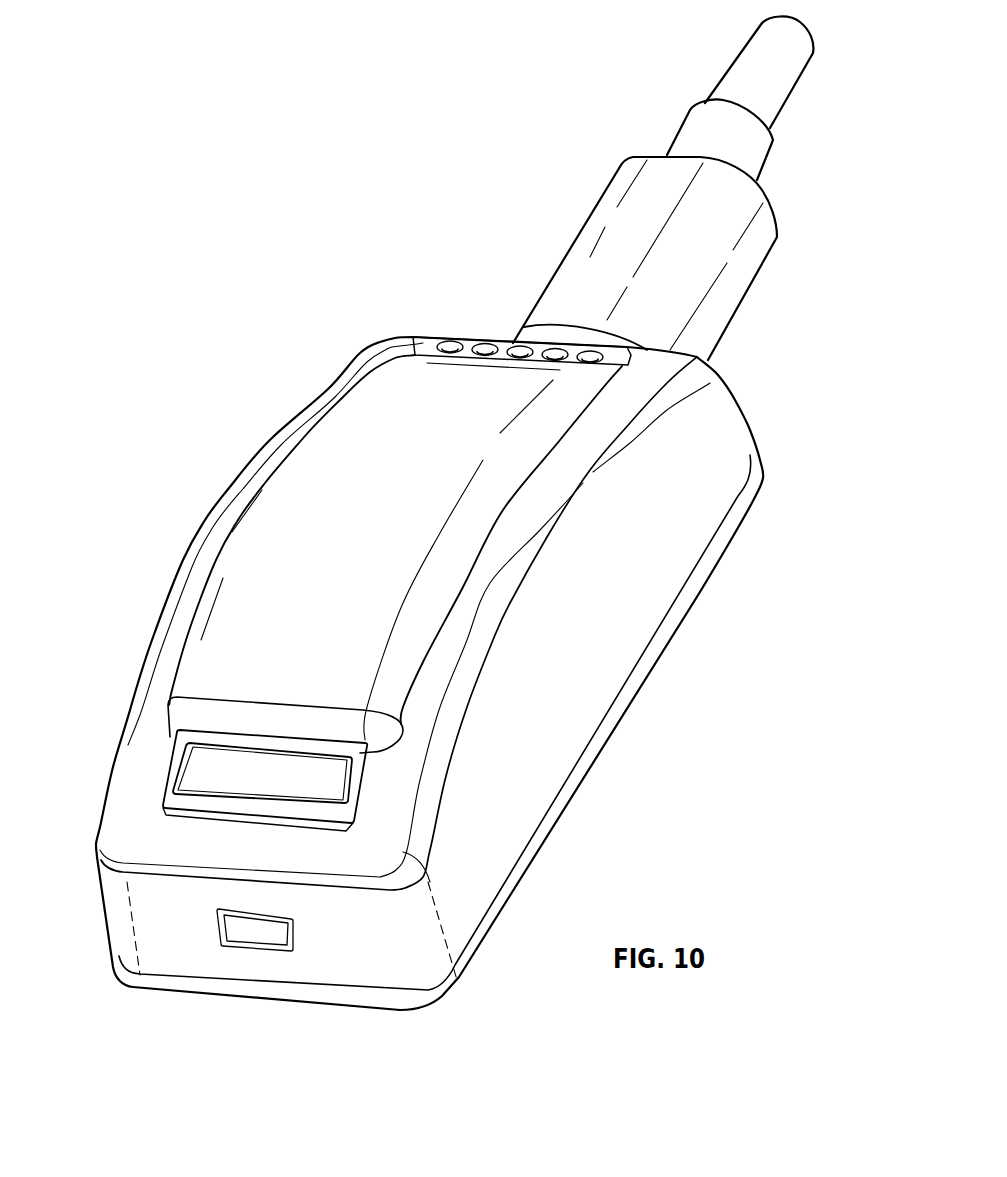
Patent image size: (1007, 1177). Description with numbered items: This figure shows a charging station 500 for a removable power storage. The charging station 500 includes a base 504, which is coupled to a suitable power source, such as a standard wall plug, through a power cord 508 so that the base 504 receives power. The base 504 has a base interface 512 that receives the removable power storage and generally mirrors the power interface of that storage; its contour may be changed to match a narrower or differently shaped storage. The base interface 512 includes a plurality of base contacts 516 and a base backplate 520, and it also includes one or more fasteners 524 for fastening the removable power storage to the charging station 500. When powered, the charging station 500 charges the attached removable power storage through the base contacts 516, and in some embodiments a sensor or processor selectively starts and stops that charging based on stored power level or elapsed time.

The charging station 500 is at (326, 220).
The base 504 is at (600, 622).
The power cord 508 is at (735, 314).
The base interface 512 is at (387, 424).
The base contacts 516 is at (450, 340).
The base backplate 520 is at (283, 537).
The fasteners 524 is at (295, 433).